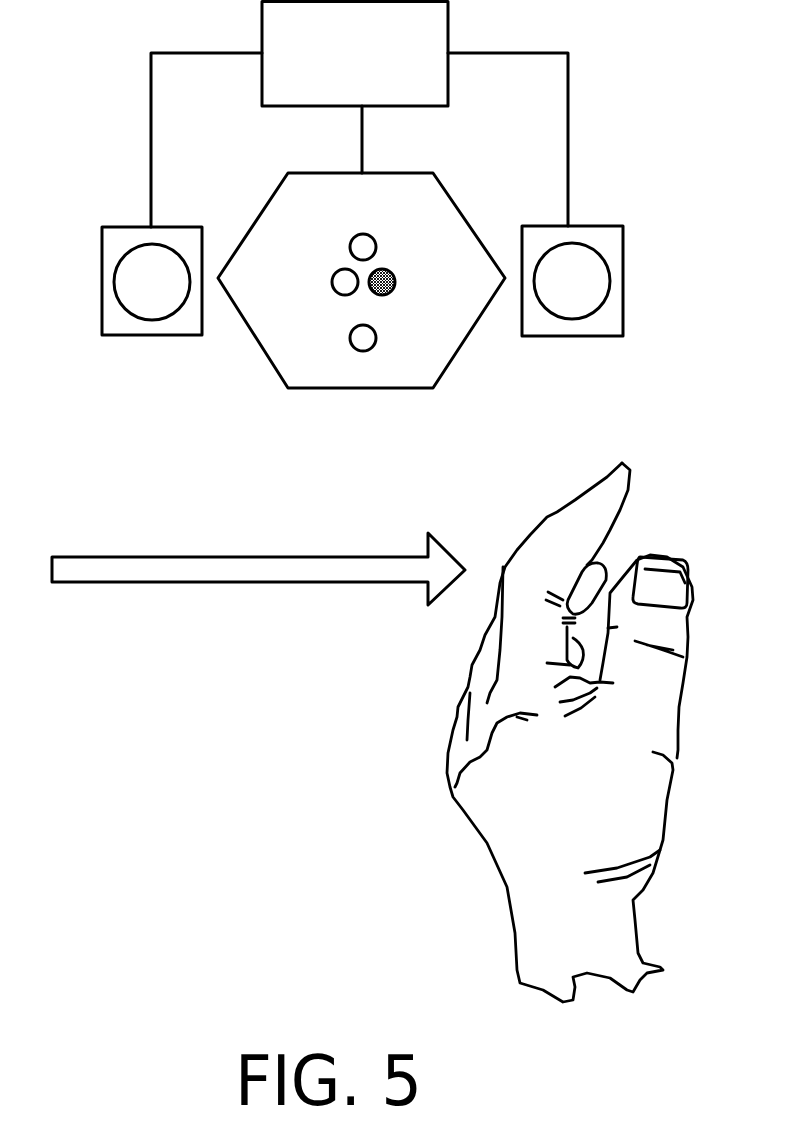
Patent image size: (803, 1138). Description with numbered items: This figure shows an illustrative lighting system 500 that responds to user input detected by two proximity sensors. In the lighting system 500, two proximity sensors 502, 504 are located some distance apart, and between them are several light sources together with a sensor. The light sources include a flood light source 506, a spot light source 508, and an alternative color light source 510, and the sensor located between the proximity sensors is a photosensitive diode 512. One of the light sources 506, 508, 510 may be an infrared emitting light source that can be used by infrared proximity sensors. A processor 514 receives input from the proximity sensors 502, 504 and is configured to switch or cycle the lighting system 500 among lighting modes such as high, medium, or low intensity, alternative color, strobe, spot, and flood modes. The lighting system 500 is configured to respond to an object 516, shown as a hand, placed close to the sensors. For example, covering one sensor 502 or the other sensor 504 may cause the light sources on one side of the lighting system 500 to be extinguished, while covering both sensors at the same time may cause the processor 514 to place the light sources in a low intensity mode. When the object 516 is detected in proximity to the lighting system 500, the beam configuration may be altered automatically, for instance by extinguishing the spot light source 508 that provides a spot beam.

The lighting system 500 is at (628, 393).
The proximity sensor 502 is at (102, 243).
The proximity sensor 504 is at (623, 245).
The flood light source 506 is at (332, 282).
The spot light source 508 is at (376, 247).
The alternative color light source 510 is at (395, 283).
The photosensitive diode 512 is at (351, 342).
The processor 514 is at (422, 66).
The object 516 is at (547, 517).